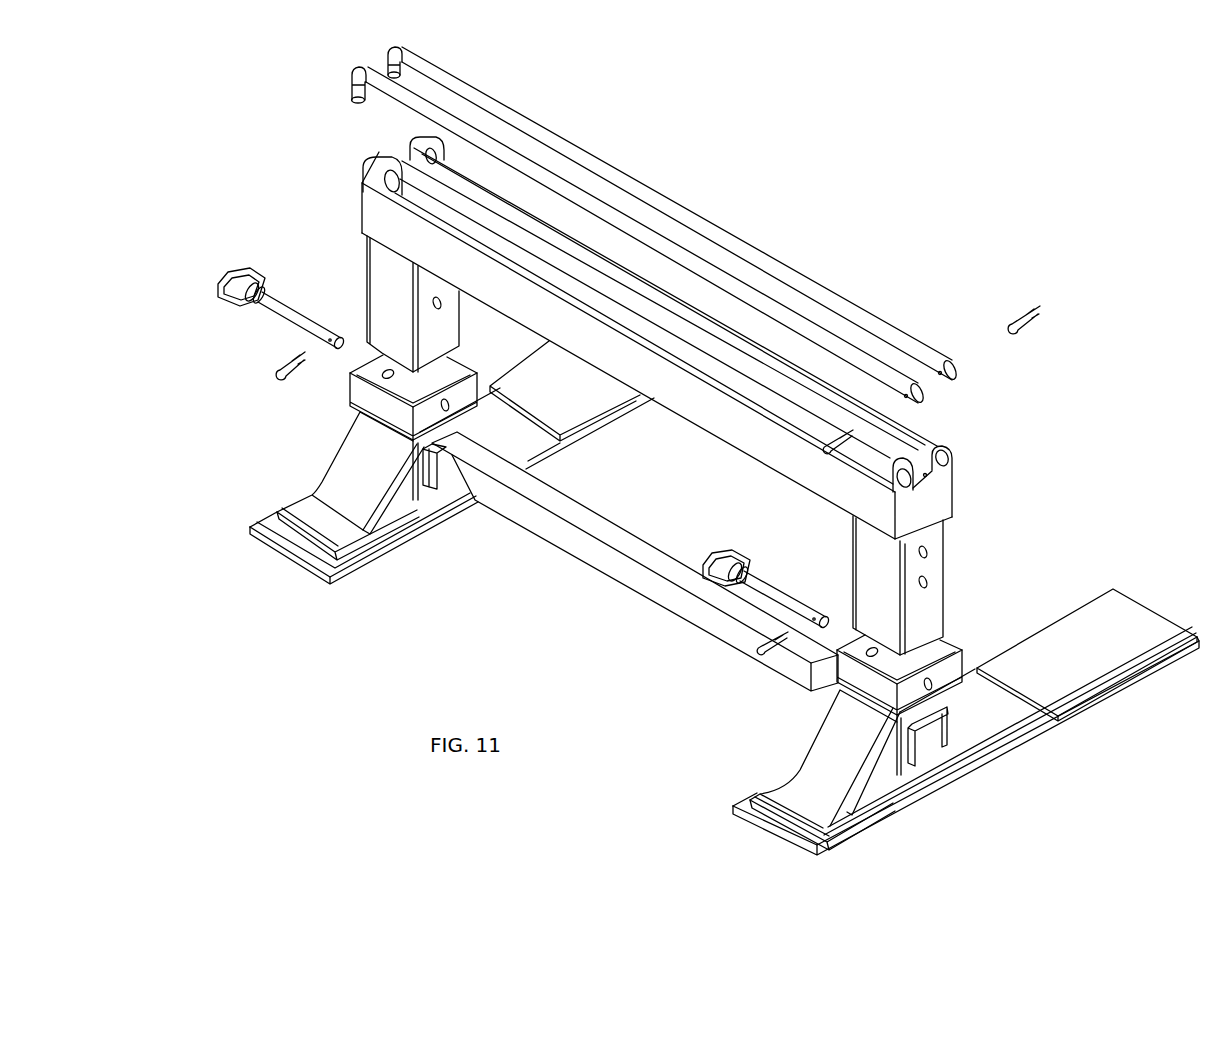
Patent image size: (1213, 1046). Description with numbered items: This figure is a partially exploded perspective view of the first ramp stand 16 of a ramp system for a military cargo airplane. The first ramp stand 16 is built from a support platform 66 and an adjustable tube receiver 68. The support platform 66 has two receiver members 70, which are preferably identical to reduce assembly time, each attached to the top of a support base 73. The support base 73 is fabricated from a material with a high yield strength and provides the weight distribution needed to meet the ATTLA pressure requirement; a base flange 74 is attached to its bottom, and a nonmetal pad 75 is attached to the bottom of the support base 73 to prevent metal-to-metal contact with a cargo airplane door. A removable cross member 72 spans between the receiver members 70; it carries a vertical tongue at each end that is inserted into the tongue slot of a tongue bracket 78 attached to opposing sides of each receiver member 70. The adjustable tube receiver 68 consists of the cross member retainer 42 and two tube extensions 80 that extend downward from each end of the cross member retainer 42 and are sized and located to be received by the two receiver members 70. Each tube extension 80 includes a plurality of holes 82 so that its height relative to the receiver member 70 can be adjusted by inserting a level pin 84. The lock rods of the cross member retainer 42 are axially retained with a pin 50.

The first ramp stand 16 is at (872, 216).
The cross member retainer 42 is at (967, 414).
The pin 50 is at (283, 375).
The support platform 66 is at (361, 626).
The adjustable tube receiver 68 is at (990, 472).
The receiver member 70 is at (417, 540).
The removable cross member 72 is at (643, 610).
The support base 73 is at (323, 532).
The base flange 74 is at (612, 425).
The nonmetal pad 75 is at (572, 412).
The tongue bracket 78 is at (440, 476).
The tube extension 80 is at (367, 280).
The holes 82 is at (930, 580).
The level pin 84 is at (240, 273).